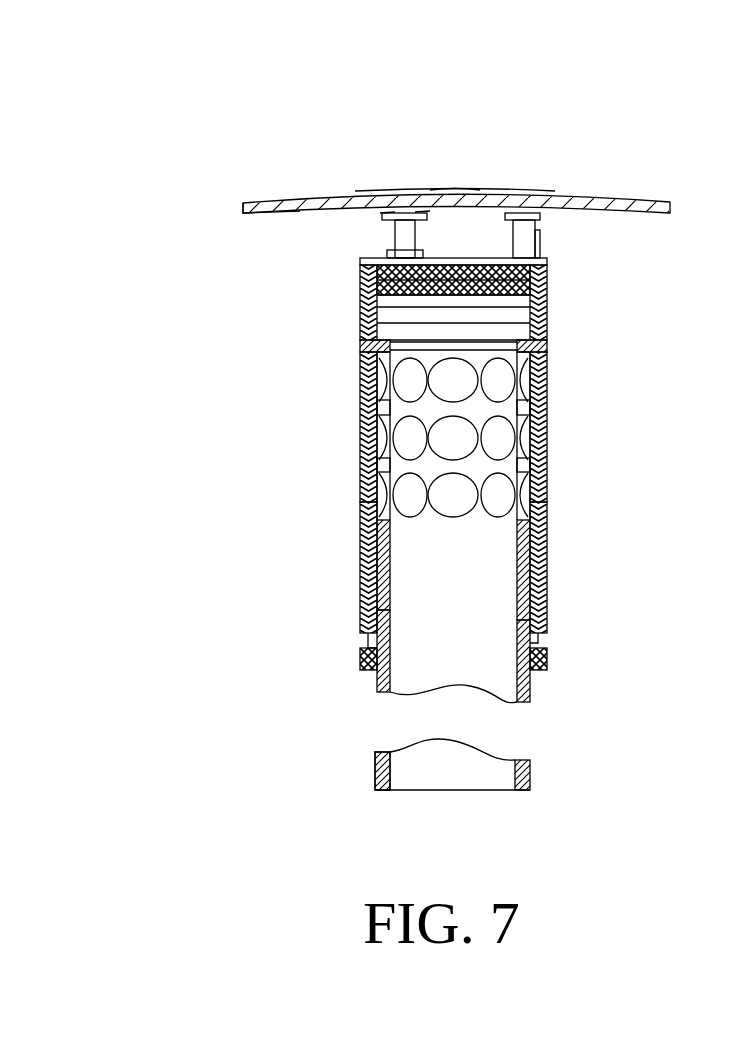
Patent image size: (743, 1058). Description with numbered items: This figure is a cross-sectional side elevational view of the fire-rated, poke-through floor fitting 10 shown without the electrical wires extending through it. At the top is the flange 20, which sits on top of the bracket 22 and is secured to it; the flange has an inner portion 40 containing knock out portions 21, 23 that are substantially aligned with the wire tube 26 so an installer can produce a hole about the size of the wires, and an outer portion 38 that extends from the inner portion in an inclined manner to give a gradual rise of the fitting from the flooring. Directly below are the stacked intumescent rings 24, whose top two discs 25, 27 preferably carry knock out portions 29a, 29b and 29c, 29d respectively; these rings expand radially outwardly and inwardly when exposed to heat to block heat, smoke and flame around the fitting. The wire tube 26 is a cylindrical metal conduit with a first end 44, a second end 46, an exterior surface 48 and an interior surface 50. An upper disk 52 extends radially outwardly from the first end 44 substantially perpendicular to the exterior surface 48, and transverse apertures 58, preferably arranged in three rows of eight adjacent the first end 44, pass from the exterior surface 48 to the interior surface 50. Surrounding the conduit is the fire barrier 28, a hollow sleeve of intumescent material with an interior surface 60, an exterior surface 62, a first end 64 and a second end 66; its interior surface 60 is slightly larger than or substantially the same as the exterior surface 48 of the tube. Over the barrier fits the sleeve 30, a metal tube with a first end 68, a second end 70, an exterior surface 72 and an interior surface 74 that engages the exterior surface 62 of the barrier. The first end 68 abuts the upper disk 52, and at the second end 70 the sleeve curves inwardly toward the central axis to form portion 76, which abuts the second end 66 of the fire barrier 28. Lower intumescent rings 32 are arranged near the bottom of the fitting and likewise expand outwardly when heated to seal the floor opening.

The fitting 10 is at (613, 170).
The flange 20 is at (657, 195).
The knock out portion 21 is at (445, 203).
The bracket 22 is at (525, 237).
The knock out portion 23 is at (402, 210).
The intumescent rings 24 is at (552, 318).
The top ring of intumescent rings 25 is at (360, 265).
The wire tube 26 is at (545, 547).
The second ring of intumescent rings 27 is at (360, 288).
The fire barrier 28 is at (552, 485).
The knock out portion 29a is at (450, 262).
The knock out portion 29b is at (547, 255).
The knock out portion 29c is at (420, 267).
The knock out portion 29d is at (547, 295).
The sleeve 30 is at (552, 448).
The intumescent rings 32 is at (547, 668).
The outer portion of flange 38 is at (300, 205).
The inner portion of flange 40 is at (370, 203).
The first end of wire tube 44 is at (547, 383).
The second end of wire tube 46 is at (377, 782).
The exterior surface of wire tube 48 is at (540, 688).
The interior surface of wire tube 50 is at (515, 775).
The upper disk 52 is at (547, 348).
The apertures 58 is at (360, 527).
The interior surface of fire barrier 60 is at (384, 580).
The exterior surface of fire barrier 62 is at (365, 612).
The first end of fire barrier 64 is at (360, 365).
The second end of fire barrier 66 is at (376, 620).
The first end of sleeve 68 is at (360, 355).
The second end of sleeve 70 is at (547, 615).
The exterior surface of sleeve 72 is at (360, 460).
The interior surface of sleeve 74 is at (360, 417).
The portion of sleeve 76 is at (540, 641).